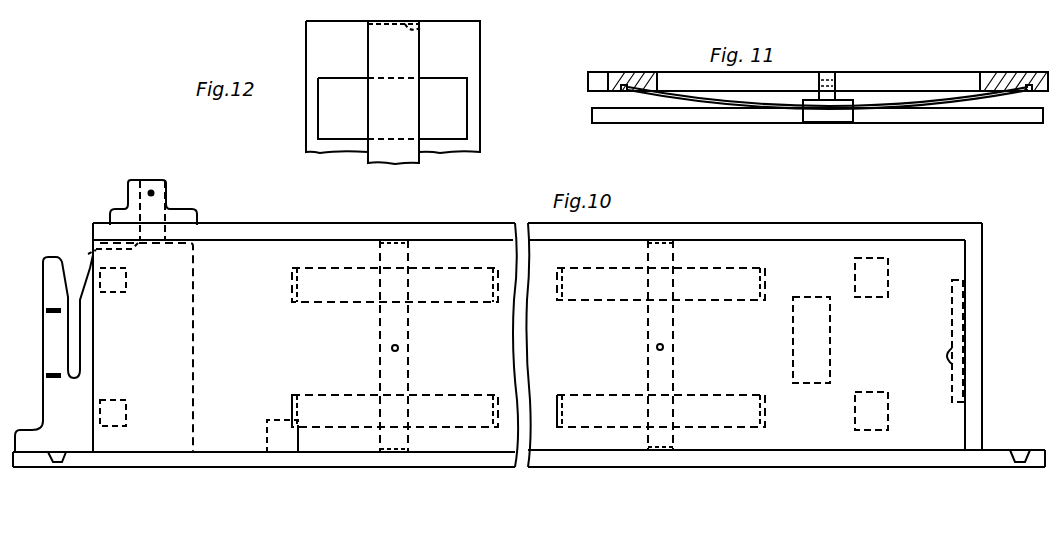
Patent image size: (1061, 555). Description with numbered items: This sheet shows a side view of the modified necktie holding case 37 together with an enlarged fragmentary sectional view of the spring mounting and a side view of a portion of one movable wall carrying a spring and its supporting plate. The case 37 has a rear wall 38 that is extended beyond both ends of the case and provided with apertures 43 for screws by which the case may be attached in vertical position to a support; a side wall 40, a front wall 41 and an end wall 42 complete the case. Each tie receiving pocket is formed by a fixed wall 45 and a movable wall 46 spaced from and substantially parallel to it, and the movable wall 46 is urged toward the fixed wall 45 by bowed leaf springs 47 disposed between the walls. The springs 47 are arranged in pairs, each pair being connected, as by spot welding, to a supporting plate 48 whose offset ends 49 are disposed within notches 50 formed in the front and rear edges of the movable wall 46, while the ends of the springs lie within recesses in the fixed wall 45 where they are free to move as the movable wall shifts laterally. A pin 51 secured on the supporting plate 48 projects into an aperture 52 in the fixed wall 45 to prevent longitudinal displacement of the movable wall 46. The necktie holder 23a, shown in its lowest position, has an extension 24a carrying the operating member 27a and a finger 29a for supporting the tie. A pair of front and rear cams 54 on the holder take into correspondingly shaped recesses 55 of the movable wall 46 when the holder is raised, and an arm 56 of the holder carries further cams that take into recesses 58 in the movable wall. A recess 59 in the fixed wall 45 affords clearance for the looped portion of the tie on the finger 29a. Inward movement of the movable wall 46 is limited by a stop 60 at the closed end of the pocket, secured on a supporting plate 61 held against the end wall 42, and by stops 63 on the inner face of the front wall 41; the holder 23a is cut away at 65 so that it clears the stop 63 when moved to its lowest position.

In FIG. 10, the necktie holder 23a is at (195, 425).
In FIG. 10, the extension 24a is at (166, 193).
In FIG. 10, the operating member 27a is at (198, 218).
In FIG. 10, the finger 29a is at (43, 277).
In FIG. 10, the case 37 is at (304, 328).
In FIG. 10, the rear wall 38 is at (496, 458).
In FIG. 10, the side wall 40 is at (942, 437).
In FIG. 10, the front wall 41 is at (806, 228).
In FIG. 10, the end wall 42 is at (983, 326).
In FIG. 10, the apertures 43 is at (58, 458).
In FIG. 11, the fixed wall 45 is at (1000, 74).
In FIG. 12, the movable wall 46 is at (468, 49).
In FIG. 11, the movable wall 46 is at (733, 118).
In FIG. 10, the bowed leaf springs 47 is at (459, 268).
In FIG. 12, the bowed leaf springs 47 is at (456, 111).
In FIG. 11, the bowed leaf springs 47 is at (935, 96).
In FIG. 10, the supporting plate 48 is at (408, 436).
In FIG. 12, the supporting plate 48 is at (412, 63).
In FIG. 11, the supporting plate 48 is at (800, 100).
In FIG. 10, the offset ends 49 is at (668, 246).
In FIG. 12, the offset ends 49 is at (424, 26).
In FIG. 11, the offset ends 49 is at (832, 120).
In FIG. 10, the notches 50 is at (297, 402).
In FIG. 11, the notches 50 is at (622, 96).
In FIG. 10, the pin 51 is at (657, 355).
In FIG. 11, the pin 51 is at (845, 94).
In FIG. 11, the aperture 52 is at (829, 76).
In FIG. 10, the cams 54 is at (127, 418).
In FIG. 10, the recesses 55 is at (859, 264).
In FIG. 10, the arm 56 is at (33, 442).
In FIG. 10, the recesses 58 is at (268, 432).
In FIG. 10, the recess 59 is at (828, 368).
In FIG. 10, the stop 60 is at (966, 362).
In FIG. 10, the supporting plate 61 is at (957, 248).
In FIG. 10, the stops 63 is at (91, 252).
In FIG. 10, the cut away 65 is at (130, 243).